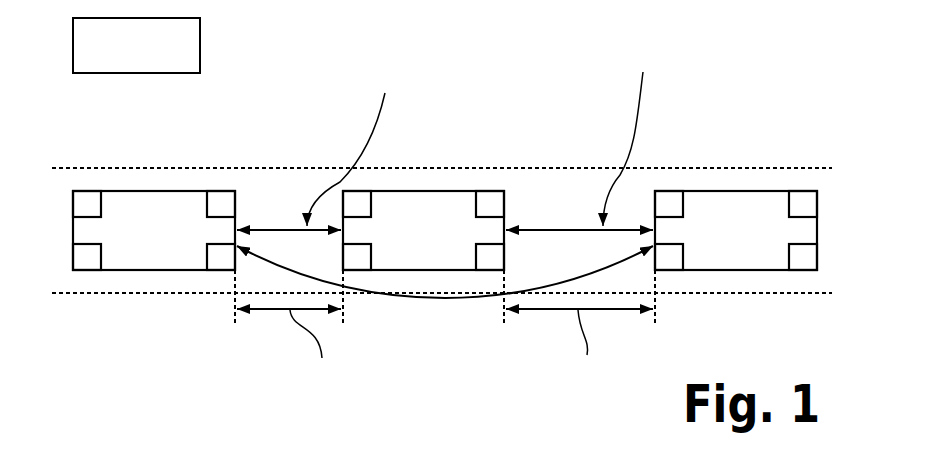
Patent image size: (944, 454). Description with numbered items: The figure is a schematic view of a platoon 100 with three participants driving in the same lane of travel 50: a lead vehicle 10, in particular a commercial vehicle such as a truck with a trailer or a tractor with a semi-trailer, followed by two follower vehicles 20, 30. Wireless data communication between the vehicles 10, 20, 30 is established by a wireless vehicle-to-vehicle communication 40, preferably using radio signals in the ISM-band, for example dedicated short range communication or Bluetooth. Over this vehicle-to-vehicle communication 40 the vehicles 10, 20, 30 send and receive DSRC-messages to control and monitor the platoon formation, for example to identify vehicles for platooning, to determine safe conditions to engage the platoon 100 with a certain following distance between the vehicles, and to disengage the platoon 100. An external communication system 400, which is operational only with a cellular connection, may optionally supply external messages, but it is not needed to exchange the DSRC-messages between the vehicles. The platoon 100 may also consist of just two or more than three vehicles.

The lead vehicle 10 is at (154, 191).
The follower vehicle 20 is at (425, 191).
The follower vehicle 30 is at (735, 191).
The vehicle-to-vehicle communication 40 is at (288, 230).
The lane of travel 50 is at (53, 293).
The platoon 100 is at (197, 352).
The external communication system 400 is at (200, 43).